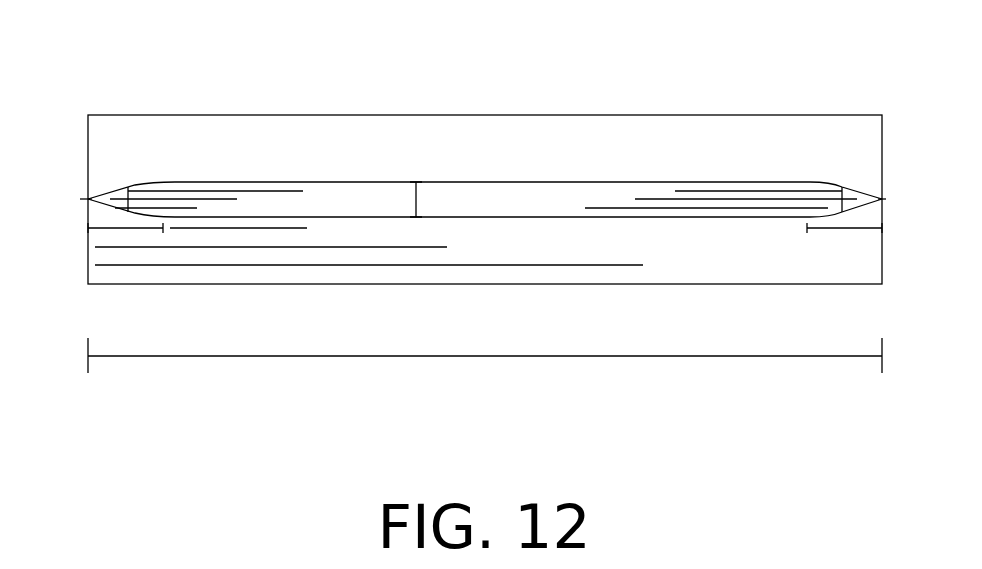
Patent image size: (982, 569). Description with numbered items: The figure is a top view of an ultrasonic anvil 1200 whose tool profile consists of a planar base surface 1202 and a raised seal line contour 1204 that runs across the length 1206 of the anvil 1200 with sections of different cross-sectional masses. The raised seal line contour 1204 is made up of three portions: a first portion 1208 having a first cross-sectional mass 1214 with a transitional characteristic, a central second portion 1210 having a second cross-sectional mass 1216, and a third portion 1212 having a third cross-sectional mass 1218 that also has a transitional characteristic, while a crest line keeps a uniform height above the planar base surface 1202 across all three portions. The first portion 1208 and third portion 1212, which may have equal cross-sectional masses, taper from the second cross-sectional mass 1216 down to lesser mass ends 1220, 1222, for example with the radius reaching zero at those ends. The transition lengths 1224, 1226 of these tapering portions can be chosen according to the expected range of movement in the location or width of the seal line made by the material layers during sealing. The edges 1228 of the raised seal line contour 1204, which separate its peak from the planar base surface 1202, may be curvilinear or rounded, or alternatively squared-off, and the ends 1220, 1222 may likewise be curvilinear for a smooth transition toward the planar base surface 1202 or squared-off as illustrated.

The ultrasonic anvil 1200 is at (567, 54).
The planar base surface 1202 is at (229, 133).
The raised seal line contour 1204 is at (340, 193).
The length 1206 is at (263, 356).
The first portion 1208 is at (112, 190).
The second portion 1210 is at (485, 193).
The third portion 1212 is at (847, 197).
The first cross-sectional mass 1214 is at (150, 182).
The second cross-sectional mass 1216 is at (416, 200).
The third cross-sectional mass 1218 is at (833, 187).
The lesser mass end 1220 is at (88, 199).
The lesser mass end 1222 is at (882, 199).
The transition length 1224 is at (128, 230).
The transition length 1226 is at (843, 230).
The edges 1228 is at (723, 182).